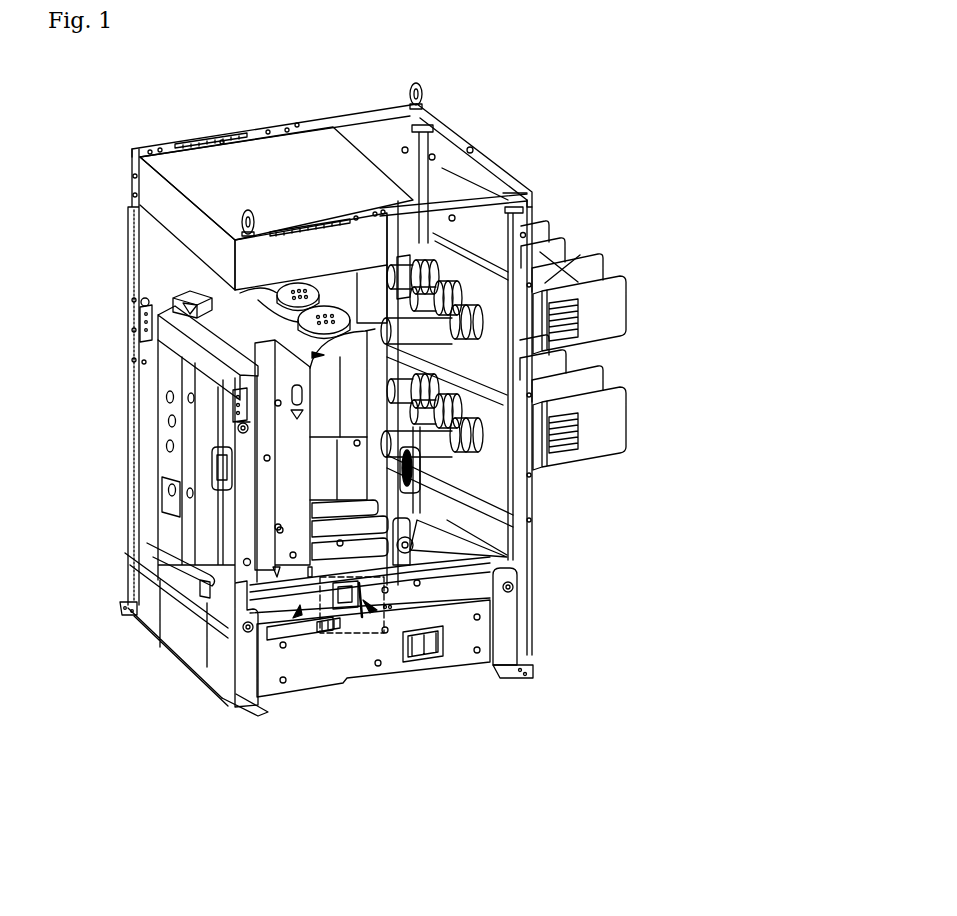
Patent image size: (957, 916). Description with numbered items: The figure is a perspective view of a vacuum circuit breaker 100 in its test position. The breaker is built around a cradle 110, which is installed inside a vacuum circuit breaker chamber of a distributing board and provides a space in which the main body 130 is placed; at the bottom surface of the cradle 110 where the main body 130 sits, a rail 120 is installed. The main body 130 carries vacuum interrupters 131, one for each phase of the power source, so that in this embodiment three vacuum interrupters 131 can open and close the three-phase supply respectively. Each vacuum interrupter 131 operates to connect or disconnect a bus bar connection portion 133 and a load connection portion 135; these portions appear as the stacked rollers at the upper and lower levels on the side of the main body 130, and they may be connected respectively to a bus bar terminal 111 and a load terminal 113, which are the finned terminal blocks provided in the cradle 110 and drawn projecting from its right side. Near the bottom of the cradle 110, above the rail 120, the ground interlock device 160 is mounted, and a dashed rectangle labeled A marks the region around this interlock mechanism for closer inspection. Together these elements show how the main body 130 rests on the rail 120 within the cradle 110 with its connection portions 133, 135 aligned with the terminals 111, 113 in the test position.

The vacuum circuit breaker 100 is at (516, 109).
The cradle 110 is at (197, 143).
The bus bar terminal 111 is at (585, 251).
The load terminal 113 is at (602, 390).
The rail 120 is at (294, 608).
The main body 130 is at (212, 296).
The vacuum interrupter 131 is at (367, 413).
The bus bar connection portion 133 is at (462, 297).
The load connection portion 135 is at (490, 442).
The ground interlock device 160 is at (388, 617).
The detail region A is at (350, 635).